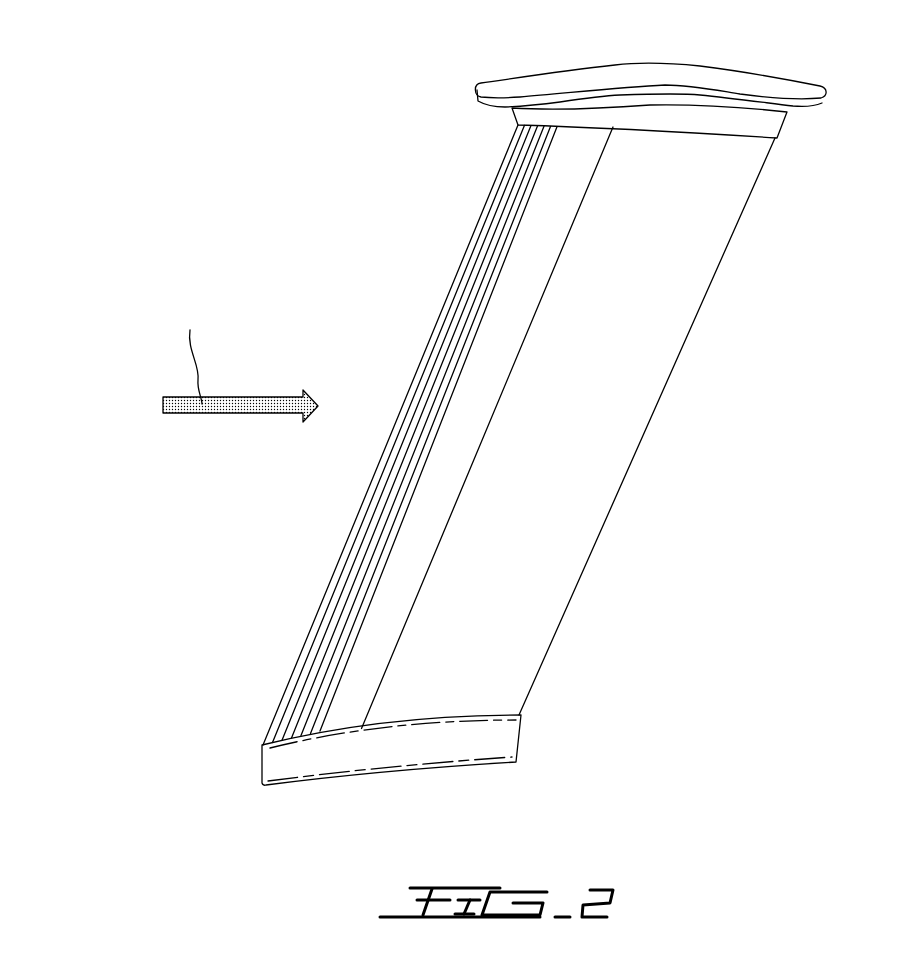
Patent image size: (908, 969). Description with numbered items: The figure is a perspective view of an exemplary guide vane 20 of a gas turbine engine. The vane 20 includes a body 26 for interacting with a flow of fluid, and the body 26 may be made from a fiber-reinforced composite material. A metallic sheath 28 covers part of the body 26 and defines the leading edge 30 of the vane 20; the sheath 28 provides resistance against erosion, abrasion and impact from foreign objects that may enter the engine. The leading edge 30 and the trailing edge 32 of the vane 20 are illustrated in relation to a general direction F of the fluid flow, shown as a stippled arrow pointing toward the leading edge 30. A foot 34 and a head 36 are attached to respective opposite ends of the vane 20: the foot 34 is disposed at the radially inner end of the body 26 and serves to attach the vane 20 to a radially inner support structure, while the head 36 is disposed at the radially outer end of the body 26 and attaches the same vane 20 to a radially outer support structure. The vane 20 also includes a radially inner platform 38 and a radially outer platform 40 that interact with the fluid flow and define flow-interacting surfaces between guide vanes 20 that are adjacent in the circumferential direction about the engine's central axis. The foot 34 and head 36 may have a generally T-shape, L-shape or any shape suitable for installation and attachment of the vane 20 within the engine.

The vane 20 is at (148, 129).
The body 26 is at (590, 405).
The metallic sheath 28 is at (453, 337).
The leading edge 30 is at (318, 610).
The trailing edge 32 is at (707, 285).
The foot 34 is at (260, 781).
The head 36 is at (794, 92).
The radially inner platform 38 is at (282, 758).
The radially outer platform 40 is at (765, 126).